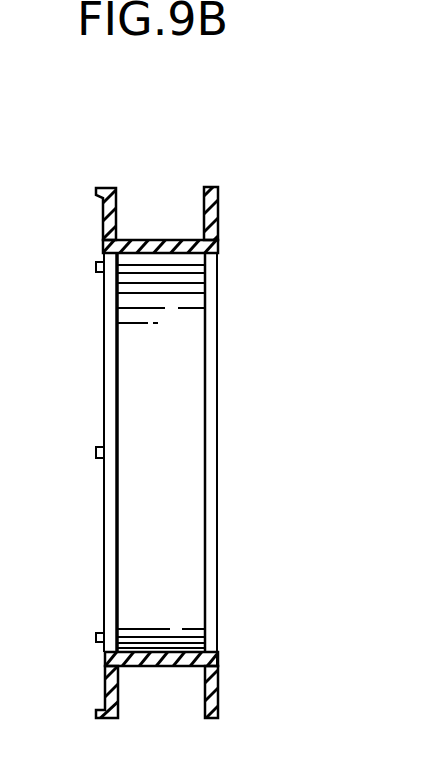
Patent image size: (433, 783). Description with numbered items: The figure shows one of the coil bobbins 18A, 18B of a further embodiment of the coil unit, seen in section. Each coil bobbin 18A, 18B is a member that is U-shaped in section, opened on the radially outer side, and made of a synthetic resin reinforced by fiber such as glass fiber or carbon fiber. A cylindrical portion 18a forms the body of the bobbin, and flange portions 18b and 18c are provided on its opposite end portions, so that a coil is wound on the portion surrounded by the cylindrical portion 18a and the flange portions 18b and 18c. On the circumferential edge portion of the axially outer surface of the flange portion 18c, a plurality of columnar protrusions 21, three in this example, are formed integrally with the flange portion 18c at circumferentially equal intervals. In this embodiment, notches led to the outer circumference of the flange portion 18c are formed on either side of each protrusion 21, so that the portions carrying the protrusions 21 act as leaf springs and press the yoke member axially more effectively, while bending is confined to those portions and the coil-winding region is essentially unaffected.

The coil bobbin 18A is at (165, 407).
The coil bobbin 18B is at (165, 407).
The cylindrical portion 18a is at (163, 240).
The flange portion 18b is at (218, 212).
The flange portion 18c is at (104, 232).
The columnar protrusion 21 is at (97, 191).